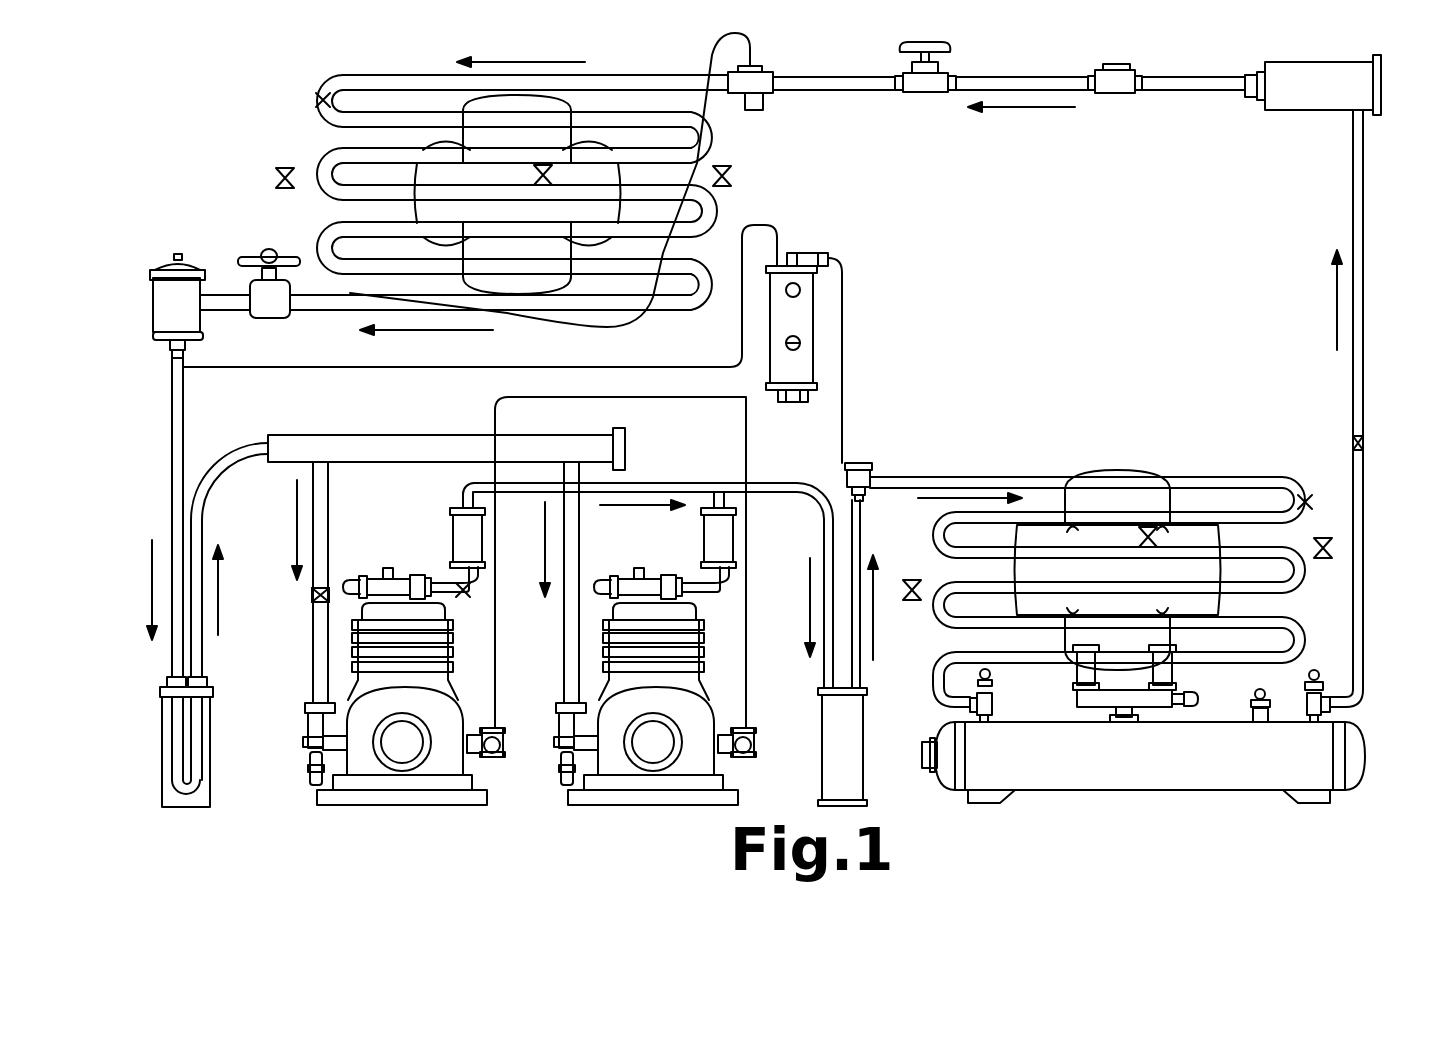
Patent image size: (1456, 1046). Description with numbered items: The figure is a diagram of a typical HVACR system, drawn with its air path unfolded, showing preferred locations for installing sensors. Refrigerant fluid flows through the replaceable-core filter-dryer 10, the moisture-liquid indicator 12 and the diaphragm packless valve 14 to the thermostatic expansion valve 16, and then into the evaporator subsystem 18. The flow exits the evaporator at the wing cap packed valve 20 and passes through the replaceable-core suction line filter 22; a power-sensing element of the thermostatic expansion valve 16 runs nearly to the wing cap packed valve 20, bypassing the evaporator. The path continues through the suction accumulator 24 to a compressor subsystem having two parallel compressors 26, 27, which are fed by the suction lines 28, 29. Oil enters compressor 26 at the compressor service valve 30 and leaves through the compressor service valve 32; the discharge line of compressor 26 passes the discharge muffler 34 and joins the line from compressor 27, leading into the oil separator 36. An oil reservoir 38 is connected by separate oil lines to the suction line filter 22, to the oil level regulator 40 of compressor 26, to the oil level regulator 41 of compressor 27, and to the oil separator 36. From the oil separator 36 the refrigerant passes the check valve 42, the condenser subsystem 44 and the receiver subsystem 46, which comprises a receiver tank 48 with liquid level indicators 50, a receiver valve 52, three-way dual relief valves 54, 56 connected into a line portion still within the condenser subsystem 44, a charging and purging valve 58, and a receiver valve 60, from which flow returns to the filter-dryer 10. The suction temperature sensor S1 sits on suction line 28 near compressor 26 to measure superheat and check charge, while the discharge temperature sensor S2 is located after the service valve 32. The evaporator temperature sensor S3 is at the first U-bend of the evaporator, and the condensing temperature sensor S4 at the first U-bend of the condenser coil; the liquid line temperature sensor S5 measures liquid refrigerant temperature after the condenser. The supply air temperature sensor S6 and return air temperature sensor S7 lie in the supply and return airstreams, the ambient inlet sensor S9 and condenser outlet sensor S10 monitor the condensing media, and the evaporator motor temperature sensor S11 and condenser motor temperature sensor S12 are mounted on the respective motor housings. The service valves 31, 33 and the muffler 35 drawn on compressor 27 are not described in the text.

The replaceable-core filter-dryer 10 is at (1293, 110).
The moisture-liquid indicator 12 is at (1115, 93).
The diaphragm packless valve 14 is at (920, 93).
The thermostatic expansion valve 16 is at (762, 100).
The evaporator subsystem 18 is at (314, 56).
The wing cap packed valve 20 is at (270, 318).
The replaceable-core suction line filter 22 is at (153, 300).
The suction accumulator 24 is at (213, 741).
The compressor 26 is at (389, 820).
The compressor 27 is at (644, 820).
The suction line 28 is at (313, 670).
The suction line 29 is at (548, 582).
The compressor service valve 30 is at (314, 764).
The second suction service valve 31 is at (565, 765).
The compressor service valve 32 is at (378, 580).
The second discharge valve 33 is at (628, 580).
The discharge muffler 34 is at (453, 535).
The second discharge filter 35 is at (704, 535).
The oil separator 36 is at (818, 778).
The oil reservoir 38 is at (813, 328).
The oil level regulator 40 is at (503, 742).
The oil level regulator 41 is at (754, 745).
The check valve 42 is at (870, 474).
The condenser subsystem 44 is at (1090, 443).
The receiver subsystem 46 is at (1108, 804).
The receiver tank 48 is at (1250, 790).
The liquid level indicators 50 is at (922, 755).
The receiver valve 52 is at (975, 690).
The three-way dual relief valve 54 is at (1075, 668).
The three-way dual relief valve 56 is at (1173, 670).
The charging and purging valve 58 is at (1253, 715).
The receiver valve 60 is at (1320, 690).
The suction temperature sensor S1 is at (312, 594).
The discharge temperature sensor S2 is at (467, 595).
The evaporator temperature sensor S3 is at (322, 100).
The condensing temperature sensor S4 is at (1306, 500).
The liquid line temperature sensor S5 is at (1364, 443).
The supply air temperature sensor S6 is at (276, 180).
The return air temperature sensor S7 is at (731, 177).
The ambient air or water inlet temperature sensor S9 is at (1323, 558).
The condenser air-water temperature sensor S10 is at (910, 580).
The evaporator motor temperature sensor S11 is at (543, 165).
The condenser motor temperature sensor S12 is at (1148, 527).